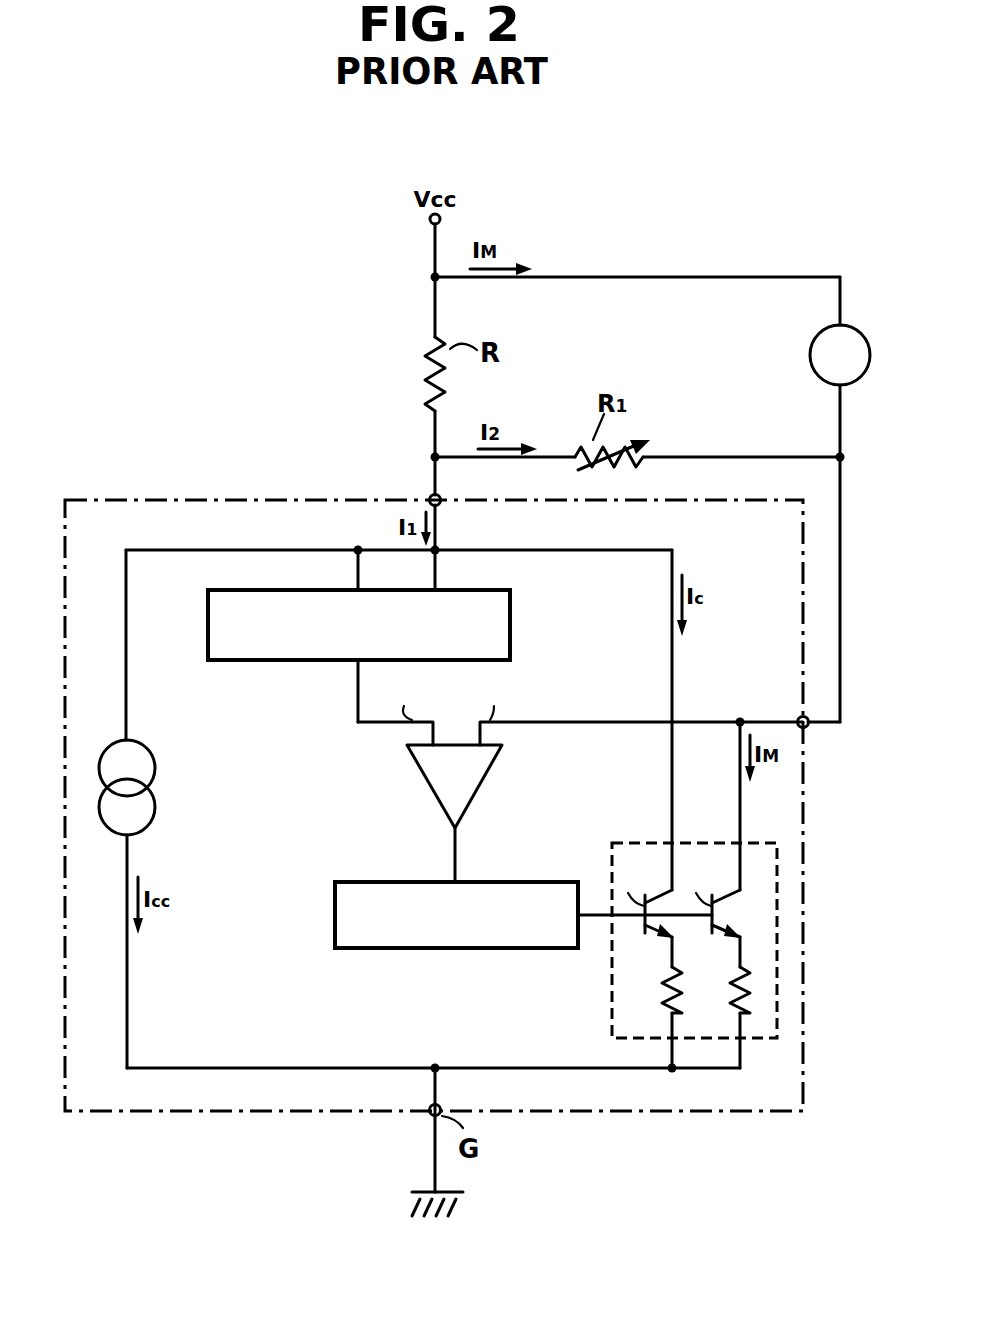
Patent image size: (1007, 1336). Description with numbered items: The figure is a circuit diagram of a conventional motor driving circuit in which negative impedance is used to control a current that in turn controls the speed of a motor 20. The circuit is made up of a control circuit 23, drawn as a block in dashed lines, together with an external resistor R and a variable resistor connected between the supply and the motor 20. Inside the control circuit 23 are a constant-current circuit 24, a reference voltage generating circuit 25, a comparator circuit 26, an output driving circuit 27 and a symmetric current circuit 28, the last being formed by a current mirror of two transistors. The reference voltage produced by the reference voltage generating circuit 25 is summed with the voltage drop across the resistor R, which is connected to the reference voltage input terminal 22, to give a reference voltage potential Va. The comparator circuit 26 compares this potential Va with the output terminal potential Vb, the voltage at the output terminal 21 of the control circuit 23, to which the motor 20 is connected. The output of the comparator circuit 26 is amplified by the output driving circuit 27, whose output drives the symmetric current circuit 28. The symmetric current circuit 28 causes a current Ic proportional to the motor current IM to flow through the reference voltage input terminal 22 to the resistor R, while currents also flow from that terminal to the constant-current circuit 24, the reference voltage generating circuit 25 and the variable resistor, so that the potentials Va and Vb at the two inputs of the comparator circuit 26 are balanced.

The motor 20 is at (866, 376).
The output terminal 21 is at (808, 730).
The reference voltage input terminal 22 is at (430, 494).
The control circuit 23 is at (806, 1002).
The constant-current circuit 24 is at (156, 812).
The reference voltage generating circuit 25 is at (270, 662).
The comparator circuit 26 is at (420, 774).
The output driving circuit 27 is at (384, 949).
The symmetric current circuit 28 is at (608, 970).